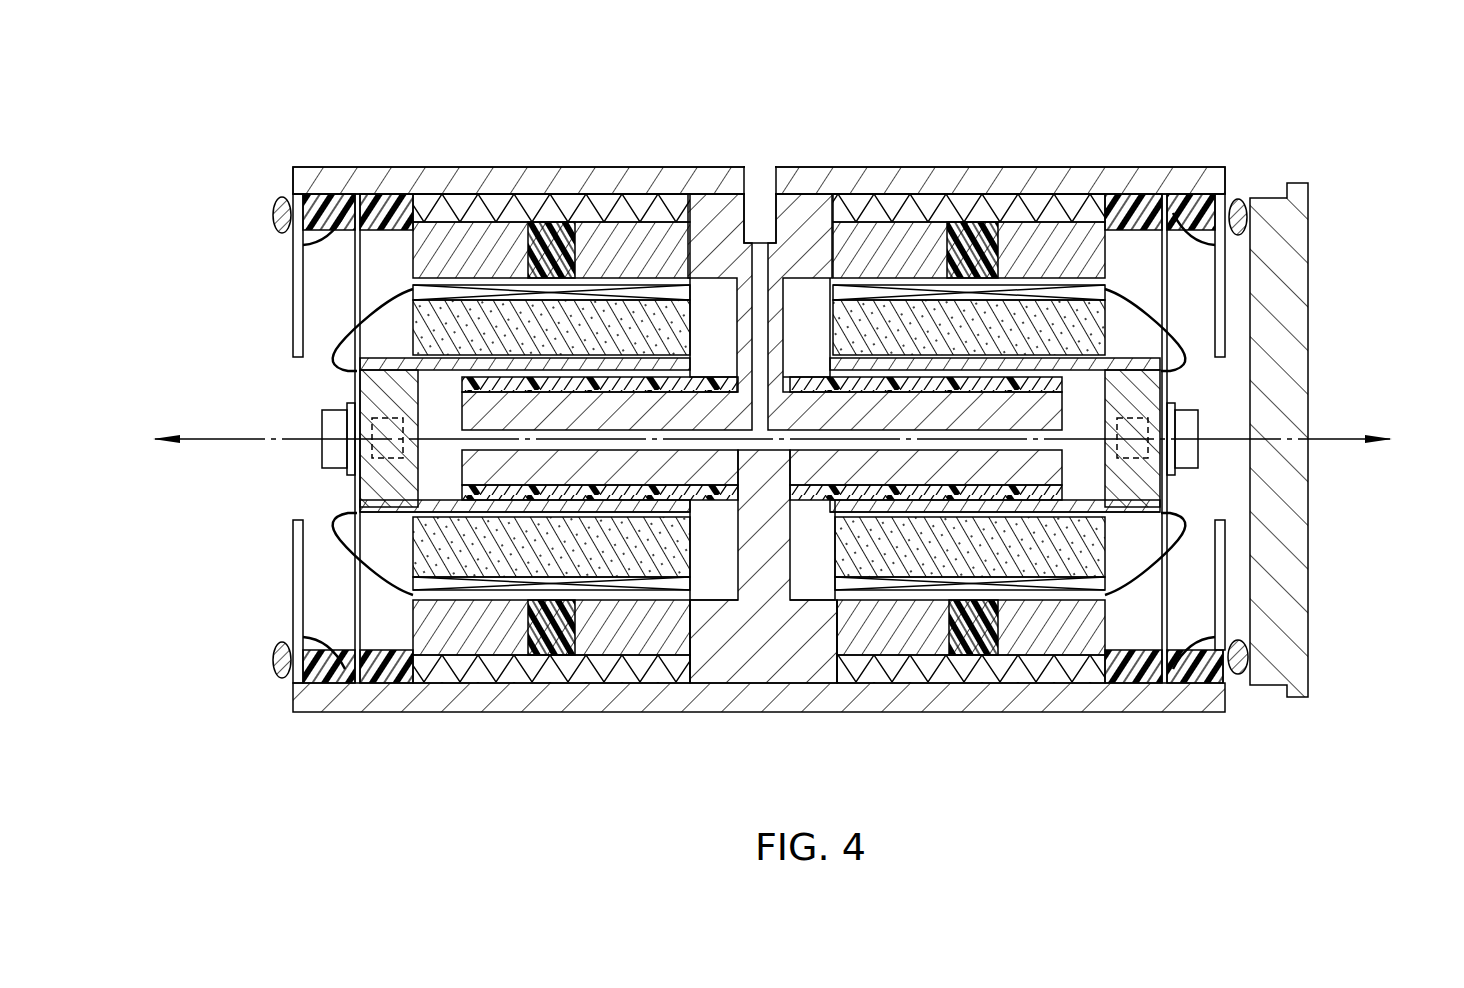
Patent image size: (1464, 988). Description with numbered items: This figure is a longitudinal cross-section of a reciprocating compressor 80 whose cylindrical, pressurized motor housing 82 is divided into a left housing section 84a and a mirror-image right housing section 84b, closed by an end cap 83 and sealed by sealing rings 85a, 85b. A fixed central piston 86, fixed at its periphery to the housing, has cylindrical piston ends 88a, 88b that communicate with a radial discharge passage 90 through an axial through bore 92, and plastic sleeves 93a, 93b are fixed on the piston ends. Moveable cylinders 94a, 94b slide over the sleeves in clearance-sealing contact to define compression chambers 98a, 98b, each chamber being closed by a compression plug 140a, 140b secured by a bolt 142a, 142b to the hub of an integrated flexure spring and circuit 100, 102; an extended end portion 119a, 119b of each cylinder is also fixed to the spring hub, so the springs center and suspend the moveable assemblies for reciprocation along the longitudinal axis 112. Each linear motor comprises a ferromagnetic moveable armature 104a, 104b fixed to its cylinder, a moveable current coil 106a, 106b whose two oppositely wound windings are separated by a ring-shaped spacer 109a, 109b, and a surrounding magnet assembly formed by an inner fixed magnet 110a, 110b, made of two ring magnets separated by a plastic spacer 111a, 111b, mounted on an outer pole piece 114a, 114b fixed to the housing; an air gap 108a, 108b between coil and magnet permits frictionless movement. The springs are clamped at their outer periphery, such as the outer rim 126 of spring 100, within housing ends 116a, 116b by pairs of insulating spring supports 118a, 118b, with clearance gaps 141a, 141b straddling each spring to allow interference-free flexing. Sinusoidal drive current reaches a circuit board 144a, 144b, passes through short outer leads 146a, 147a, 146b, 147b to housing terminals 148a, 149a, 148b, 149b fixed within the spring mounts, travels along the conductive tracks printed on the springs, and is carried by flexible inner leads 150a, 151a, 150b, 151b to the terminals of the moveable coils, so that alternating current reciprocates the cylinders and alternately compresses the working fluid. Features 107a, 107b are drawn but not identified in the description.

The reciprocating compressor 80 is at (818, 60).
The motor housing 82 is at (832, 167).
The end cap 83 is at (1294, 210).
The first housing section 84a is at (543, 168).
The second housing section 84b is at (1016, 168).
The sealing ring 85a is at (280, 678).
The sealing ring 85b is at (1240, 676).
The fixed central piston 86 is at (762, 663).
The first piston end 88a is at (505, 505).
The second piston end 88b is at (1025, 488).
The discharge passage 90 is at (763, 250).
The axial through bore 92 is at (1160, 425).
The plastic sleeve 93a is at (714, 500).
The plastic sleeve 93b is at (812, 500).
The moveable cylinder 94a is at (708, 356).
The moveable cylinder 94b is at (812, 356).
The compression chamber 98a is at (440, 471).
The compression chamber 98b is at (1090, 400).
The integrated flexure spring and circuit 100 is at (350, 620).
The integrated flexure spring and circuit 102 is at (1185, 580).
The moveable armature 104a is at (432, 560).
The moveable armature 104b is at (1120, 555).
The moveable current coil 106a is at (432, 590).
The moveable current coil 106b is at (1130, 590).
The wall 107a is at (713, 583).
The wall 107b is at (812, 583).
The air gap 108a is at (432, 310).
The air gap 108b is at (1108, 287).
The ring-shaped spacer 109a is at (557, 292).
The ring-shaped spacer 109b is at (966, 292).
The inner fixed magnet 110a is at (432, 250).
The inner fixed magnet 110b is at (1160, 266).
The plastic spacer 111a is at (565, 240).
The plastic spacer 111b is at (962, 240).
The longitudinal axis 112 is at (1345, 452).
The outer pole piece 114a is at (458, 195).
The outer pole piece 114b is at (1072, 195).
The housing end 116a is at (333, 197).
The housing end 116b is at (1188, 197).
The spring supports 118a is at (372, 660).
The spring supports 118b is at (1195, 650).
The extended end portion 119a is at (370, 510).
The extended end portion 119b is at (1150, 340).
The outer rim 126 is at (545, 625).
The compression plug 140a is at (440, 492).
The compression plug 140b is at (1100, 470).
The clearance gaps 141a is at (372, 240).
The clearance gaps 141b is at (1148, 240).
The bolt 142a is at (330, 423).
The bolt 142b is at (1195, 455).
The circuit board 144a is at (298, 300).
The circuit board 144b is at (1222, 318).
The electrical outer lead 146a is at (274, 214).
The electrical outer lead 146b is at (1163, 250).
The electrical outer lead 147a is at (300, 650).
The electrical outer lead 147b is at (1140, 660).
The electrical housing terminal 148a is at (292, 197).
The electrical housing terminal 148b is at (1240, 197).
The electrical housing terminal 149a is at (340, 683).
The electrical housing terminal 149b is at (1200, 676).
The flexible electrical inner lead 150a is at (333, 342).
The flexible electrical inner lead 150b is at (1185, 342).
The flexible electrical inner lead 151a is at (333, 541).
The flexible electrical inner lead 151b is at (1185, 541).